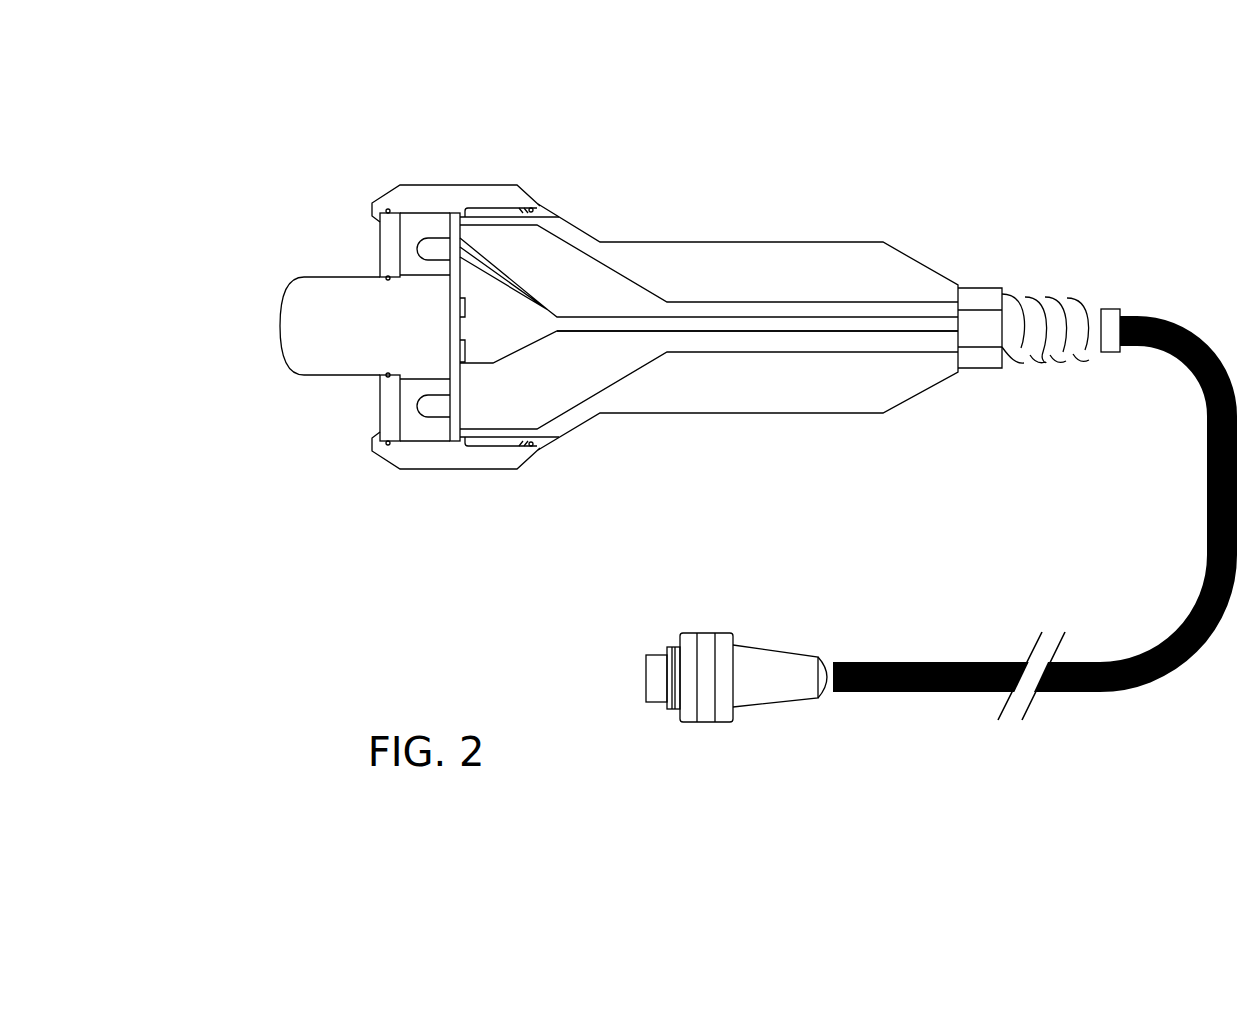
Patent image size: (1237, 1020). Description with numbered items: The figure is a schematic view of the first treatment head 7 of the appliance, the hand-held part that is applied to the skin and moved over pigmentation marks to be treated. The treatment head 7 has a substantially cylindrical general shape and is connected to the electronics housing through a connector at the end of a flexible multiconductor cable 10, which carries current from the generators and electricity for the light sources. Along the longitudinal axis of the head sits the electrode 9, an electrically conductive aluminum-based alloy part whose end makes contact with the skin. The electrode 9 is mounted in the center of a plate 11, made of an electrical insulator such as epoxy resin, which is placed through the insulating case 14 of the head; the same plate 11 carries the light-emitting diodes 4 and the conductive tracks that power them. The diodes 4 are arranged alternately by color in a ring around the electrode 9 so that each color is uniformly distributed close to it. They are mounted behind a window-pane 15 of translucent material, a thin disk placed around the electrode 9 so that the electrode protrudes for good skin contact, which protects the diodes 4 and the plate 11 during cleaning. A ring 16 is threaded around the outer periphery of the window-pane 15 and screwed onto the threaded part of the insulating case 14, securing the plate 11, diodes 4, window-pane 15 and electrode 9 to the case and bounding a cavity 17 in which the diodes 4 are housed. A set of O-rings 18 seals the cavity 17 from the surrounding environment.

The diodes 4 is at (433, 248).
The treatment head 7 is at (810, 437).
The electrode 9 is at (312, 350).
The flexible multiconductor cable 10 is at (1234, 475).
The plate 11 is at (457, 387).
The insulating case 14 is at (563, 222).
The window-pane 15 is at (383, 238).
The ring 16 is at (515, 460).
The cavity 17 is at (405, 408).
The O-rings 18 is at (385, 373).